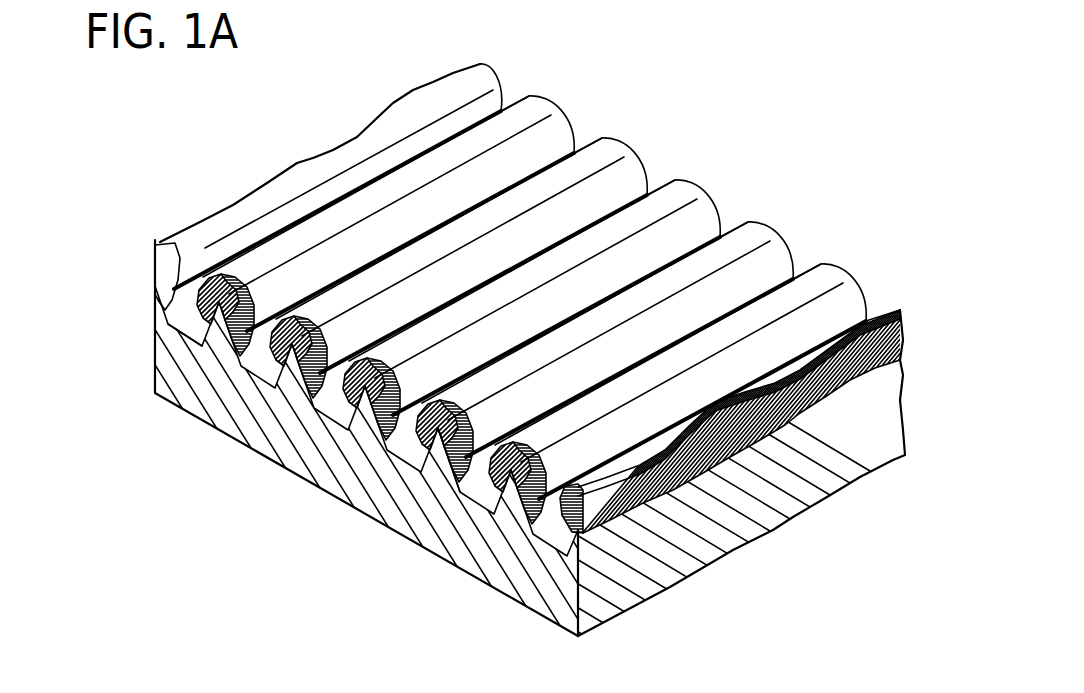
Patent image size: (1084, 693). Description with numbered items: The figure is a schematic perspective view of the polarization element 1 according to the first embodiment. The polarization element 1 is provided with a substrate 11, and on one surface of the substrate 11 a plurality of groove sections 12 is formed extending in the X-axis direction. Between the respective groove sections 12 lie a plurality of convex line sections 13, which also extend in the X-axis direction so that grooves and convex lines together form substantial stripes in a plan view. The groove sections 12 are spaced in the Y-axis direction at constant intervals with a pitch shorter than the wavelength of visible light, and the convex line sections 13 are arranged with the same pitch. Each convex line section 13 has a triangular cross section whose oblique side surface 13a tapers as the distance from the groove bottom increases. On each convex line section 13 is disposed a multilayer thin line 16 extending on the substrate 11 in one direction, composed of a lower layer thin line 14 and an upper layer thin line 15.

The polarization element 1 is at (680, 96).
The substrate 11 is at (790, 512).
The groove sections 12 is at (190, 331).
The convex line sections 13 is at (290, 392).
The side surface 13a is at (398, 440).
The lower layer thin line 14 is at (540, 519).
The upper layer thin line 15 is at (538, 484).
The multilayer thin line 16 is at (700, 587).